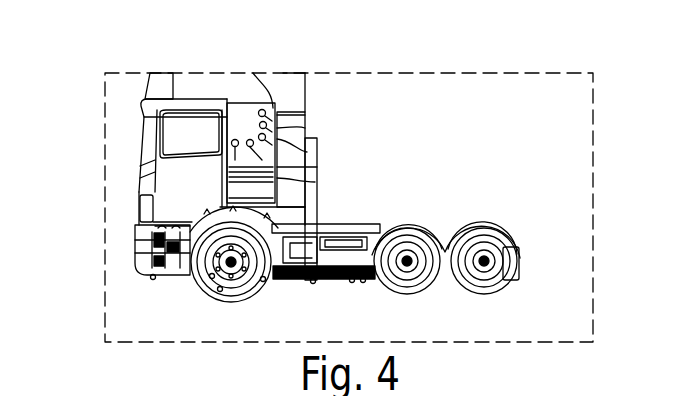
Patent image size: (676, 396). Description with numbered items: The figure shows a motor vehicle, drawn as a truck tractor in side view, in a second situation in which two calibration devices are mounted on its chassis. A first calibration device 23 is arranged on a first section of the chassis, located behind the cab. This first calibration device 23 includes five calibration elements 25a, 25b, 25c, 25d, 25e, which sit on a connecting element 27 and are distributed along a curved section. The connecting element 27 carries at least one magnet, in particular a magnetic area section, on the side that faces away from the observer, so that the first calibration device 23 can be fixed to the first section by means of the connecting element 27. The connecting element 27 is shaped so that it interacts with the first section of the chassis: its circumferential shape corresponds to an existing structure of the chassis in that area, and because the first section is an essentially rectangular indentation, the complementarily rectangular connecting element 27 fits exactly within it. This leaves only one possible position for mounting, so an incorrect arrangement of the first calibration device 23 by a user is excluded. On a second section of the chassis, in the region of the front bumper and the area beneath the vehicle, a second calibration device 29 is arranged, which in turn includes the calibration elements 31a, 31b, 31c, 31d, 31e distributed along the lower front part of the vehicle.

The first calibration device 23 is at (273, 108).
The connecting element 27 is at (243, 123).
The calibration element 25a is at (305, 112).
The calibration element 25b is at (305, 128).
The calibration element 25c is at (307, 152).
The calibration element 25d is at (317, 167).
The calibration element 25e is at (315, 182).
The second calibration device 29 is at (136, 226).
The calibration element 31a is at (153, 279).
The calibration element 31b is at (212, 278).
The calibration element 31c is at (221, 291).
The calibration element 31d is at (263, 281).
The calibration element 31e is at (313, 283).